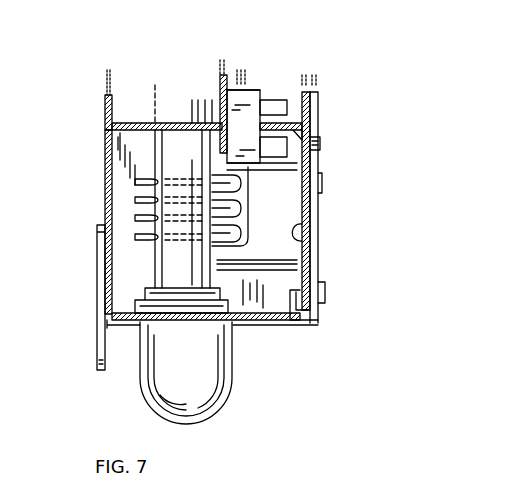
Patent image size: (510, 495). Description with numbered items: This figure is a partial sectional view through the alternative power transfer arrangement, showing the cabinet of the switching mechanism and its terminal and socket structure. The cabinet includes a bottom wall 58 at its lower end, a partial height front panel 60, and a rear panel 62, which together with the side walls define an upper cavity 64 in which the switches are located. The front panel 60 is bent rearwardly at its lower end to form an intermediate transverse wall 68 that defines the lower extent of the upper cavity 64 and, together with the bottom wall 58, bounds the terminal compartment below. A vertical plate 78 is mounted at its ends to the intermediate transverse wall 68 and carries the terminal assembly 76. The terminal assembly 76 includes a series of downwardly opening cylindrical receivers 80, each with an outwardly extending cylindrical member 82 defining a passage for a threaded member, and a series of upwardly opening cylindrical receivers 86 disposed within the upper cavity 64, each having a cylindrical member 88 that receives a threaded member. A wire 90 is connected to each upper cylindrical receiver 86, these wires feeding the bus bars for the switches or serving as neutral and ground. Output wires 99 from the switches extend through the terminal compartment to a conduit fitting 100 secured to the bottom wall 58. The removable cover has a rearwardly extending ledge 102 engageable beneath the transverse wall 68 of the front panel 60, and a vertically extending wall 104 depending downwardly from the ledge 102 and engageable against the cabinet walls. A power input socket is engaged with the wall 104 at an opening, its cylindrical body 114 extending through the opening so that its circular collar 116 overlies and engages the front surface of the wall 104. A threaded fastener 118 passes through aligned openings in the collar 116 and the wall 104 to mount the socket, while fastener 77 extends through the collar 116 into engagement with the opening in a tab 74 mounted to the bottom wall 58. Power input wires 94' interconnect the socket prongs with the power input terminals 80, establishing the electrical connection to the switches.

The bottom wall 58 is at (123, 330).
The front panel 60 is at (318, 96).
The rear panel 62 is at (105, 128).
The upper cavity 64 is at (105, 96).
The intermediate transverse wall 68 is at (137, 122).
The tab 74 is at (290, 320).
The terminal assembly 76 is at (266, 178).
The threaded fastener 77 is at (323, 295).
The vertical plate 78 is at (220, 75).
The cylindrical receiver 80 is at (240, 128).
The cylindrical member 82 is at (283, 146).
The upwardly opening cylindrical receiver 86 is at (255, 90).
The cylindrical member 88 is at (272, 100).
The wire 90 is at (233, 88).
The power input wire 94' is at (132, 209).
The output wire 99 is at (170, 263).
The conduit fitting 100 is at (213, 403).
The ledge 102 is at (310, 125).
The vertically extending wall 104 is at (310, 243).
The cylindrical body 114 is at (280, 262).
The circular collar 116 is at (318, 262).
The threaded fastener 118 is at (322, 180).